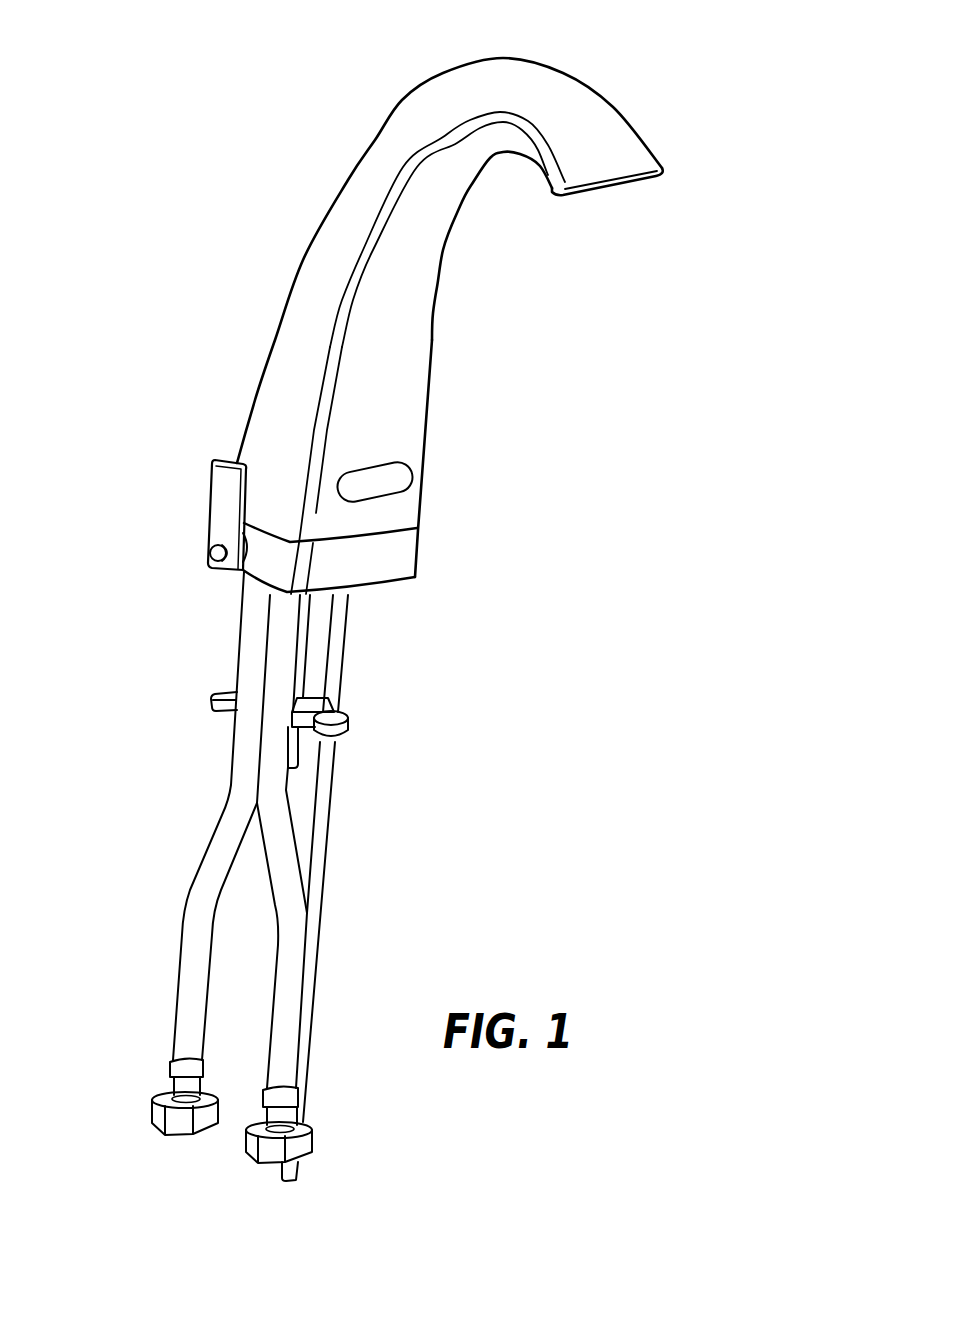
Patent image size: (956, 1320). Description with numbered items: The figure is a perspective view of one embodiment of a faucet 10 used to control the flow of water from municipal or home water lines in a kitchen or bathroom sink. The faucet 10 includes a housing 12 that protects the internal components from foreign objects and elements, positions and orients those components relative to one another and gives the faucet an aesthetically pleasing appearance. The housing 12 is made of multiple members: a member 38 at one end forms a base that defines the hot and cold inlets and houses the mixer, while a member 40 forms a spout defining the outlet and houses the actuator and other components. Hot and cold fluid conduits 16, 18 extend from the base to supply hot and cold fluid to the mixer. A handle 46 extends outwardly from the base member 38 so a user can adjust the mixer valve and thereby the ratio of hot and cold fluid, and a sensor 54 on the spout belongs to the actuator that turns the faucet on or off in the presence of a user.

The faucet 10 is at (158, 196).
The housing 12 is at (365, 180).
The member 40 is at (592, 130).
The sensor 54 is at (397, 477).
The member 38 is at (420, 550).
The handle 46 is at (210, 454).
The hot fluid conduit 16 is at (195, 972).
The cold fluid conduit 18 is at (292, 975).